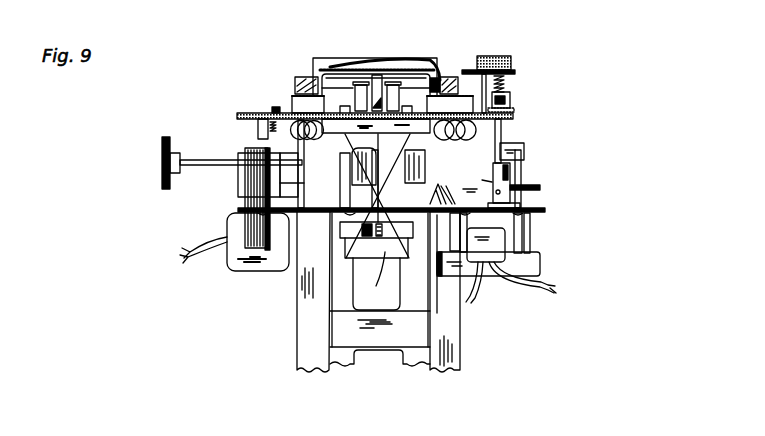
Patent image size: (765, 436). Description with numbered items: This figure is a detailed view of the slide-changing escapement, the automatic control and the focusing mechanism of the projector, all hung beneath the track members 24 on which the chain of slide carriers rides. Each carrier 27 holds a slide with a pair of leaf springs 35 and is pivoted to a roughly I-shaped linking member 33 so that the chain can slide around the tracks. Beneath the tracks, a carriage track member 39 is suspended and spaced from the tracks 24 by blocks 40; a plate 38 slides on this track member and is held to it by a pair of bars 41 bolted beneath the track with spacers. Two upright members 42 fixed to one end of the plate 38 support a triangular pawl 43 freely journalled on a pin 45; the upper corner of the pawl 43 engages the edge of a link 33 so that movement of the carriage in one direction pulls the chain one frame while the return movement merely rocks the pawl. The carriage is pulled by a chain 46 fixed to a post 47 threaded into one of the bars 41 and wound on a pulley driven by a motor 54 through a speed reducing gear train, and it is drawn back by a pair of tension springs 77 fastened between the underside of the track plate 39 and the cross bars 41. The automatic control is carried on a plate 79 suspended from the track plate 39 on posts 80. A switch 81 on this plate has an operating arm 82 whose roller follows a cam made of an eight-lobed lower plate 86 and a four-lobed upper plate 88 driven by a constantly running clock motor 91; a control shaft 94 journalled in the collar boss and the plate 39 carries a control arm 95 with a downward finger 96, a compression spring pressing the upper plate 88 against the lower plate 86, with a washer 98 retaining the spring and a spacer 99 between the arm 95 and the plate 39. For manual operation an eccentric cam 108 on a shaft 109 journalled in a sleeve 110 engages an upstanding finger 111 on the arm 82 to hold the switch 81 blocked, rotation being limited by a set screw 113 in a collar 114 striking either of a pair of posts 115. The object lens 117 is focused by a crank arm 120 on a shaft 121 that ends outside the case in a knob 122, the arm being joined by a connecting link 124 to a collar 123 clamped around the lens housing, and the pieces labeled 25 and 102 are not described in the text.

The track members 24 is at (265, 108).
The bearing block 25 is at (297, 97).
The carrier 27 is at (328, 72).
The linking member 33 is at (316, 77).
The leaf springs 35 is at (378, 76).
The plate 38 is at (421, 70).
The carriage track member 39 is at (250, 118).
The blocks 40 is at (245, 113).
The bars 41 is at (429, 112).
The upright members 42 is at (393, 84).
The pawl 43 is at (356, 80).
The pin 45 is at (302, 82).
The chain 46 is at (382, 203).
The post 47 is at (410, 139).
The motor 54 is at (232, 275).
The tension springs 77 is at (270, 128).
The plate 79 is at (248, 206).
The posts 80 is at (252, 128).
The switch 81 is at (542, 262).
The arm 82 is at (484, 203).
The lower plate 86 is at (543, 213).
The upper plate 88 is at (542, 188).
The motor 91 is at (494, 285).
The control shaft 94 is at (478, 56).
The control arm 95 is at (508, 163).
The finger 96 is at (546, 250).
The washer 98 is at (523, 182).
The spacer 99 is at (510, 108).
The coil 102 is at (481, 92).
The eccentric cam 108 is at (512, 198).
The shaft 109 is at (506, 82).
The sleeve 110 is at (513, 115).
The finger 111 is at (476, 180).
The set screw 113 is at (508, 103).
The collar 114 is at (508, 96).
The posts 115 is at (511, 72).
The object lens 117 is at (376, 282).
The crank arm 120 is at (355, 183).
The shaft 121 is at (193, 166).
The knob 122 is at (164, 182).
The collar 123 is at (434, 250).
The connecting link 124 is at (362, 217).